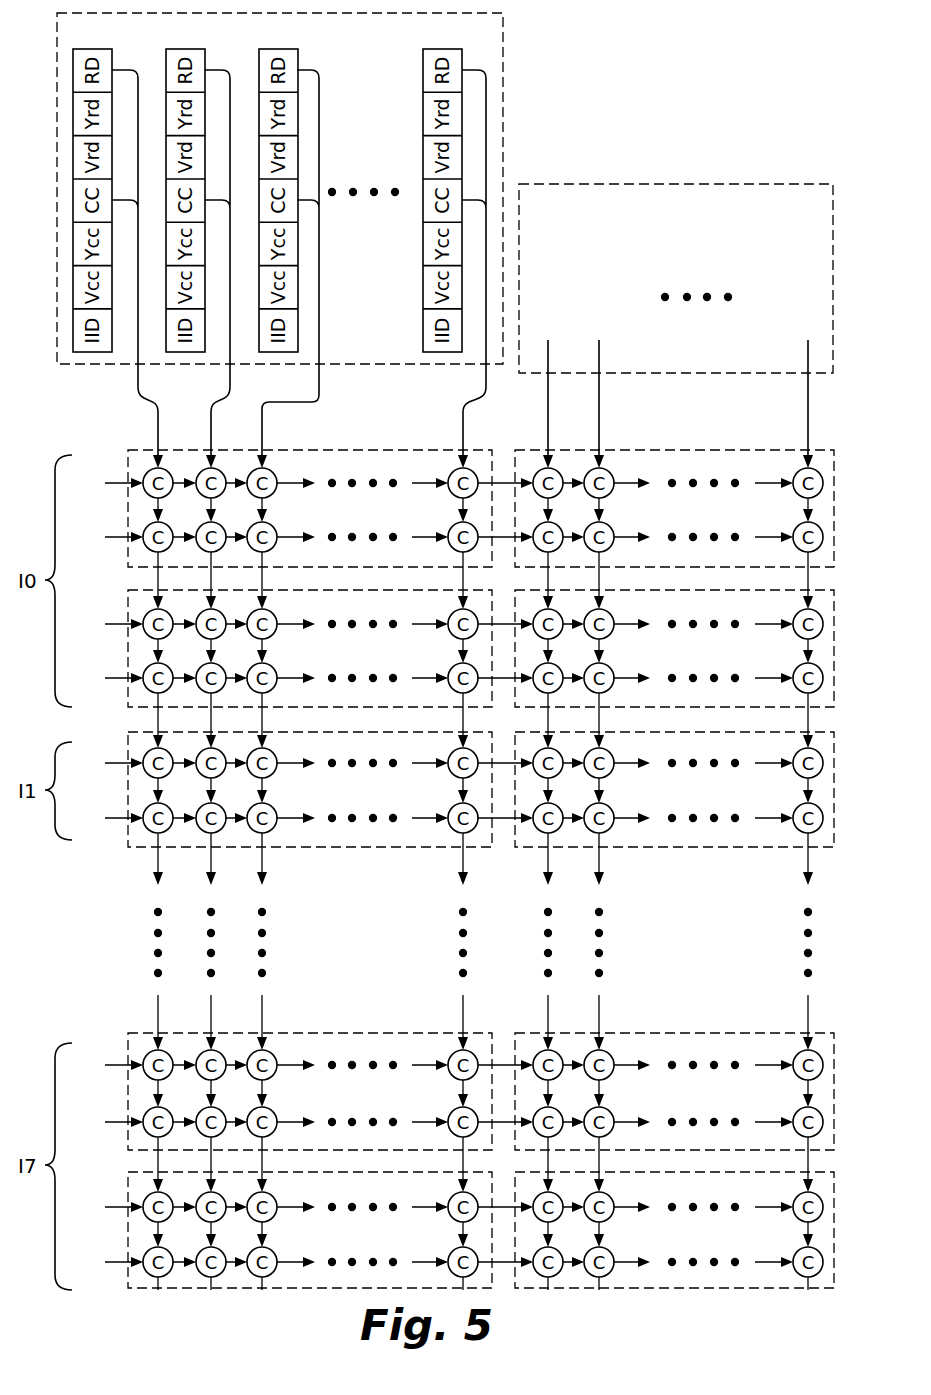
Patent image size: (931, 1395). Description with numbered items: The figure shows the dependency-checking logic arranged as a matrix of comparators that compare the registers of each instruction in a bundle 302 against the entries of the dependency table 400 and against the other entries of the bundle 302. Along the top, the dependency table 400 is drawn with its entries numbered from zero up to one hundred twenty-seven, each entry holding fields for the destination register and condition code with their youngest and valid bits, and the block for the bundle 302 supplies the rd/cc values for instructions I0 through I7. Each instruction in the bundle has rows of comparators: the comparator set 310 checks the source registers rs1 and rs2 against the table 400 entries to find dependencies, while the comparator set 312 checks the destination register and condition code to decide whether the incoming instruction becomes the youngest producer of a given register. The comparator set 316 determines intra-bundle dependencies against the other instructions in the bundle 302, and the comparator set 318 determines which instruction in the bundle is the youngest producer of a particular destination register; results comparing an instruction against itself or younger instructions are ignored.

The dependency table 400 is at (503, 86).
The bundle 302 is at (665, 184).
The comparator set 310 is at (128, 450).
The comparator set 312 is at (128, 707).
The comparator set 316 is at (758, 450).
The comparator set 318 is at (834, 657).